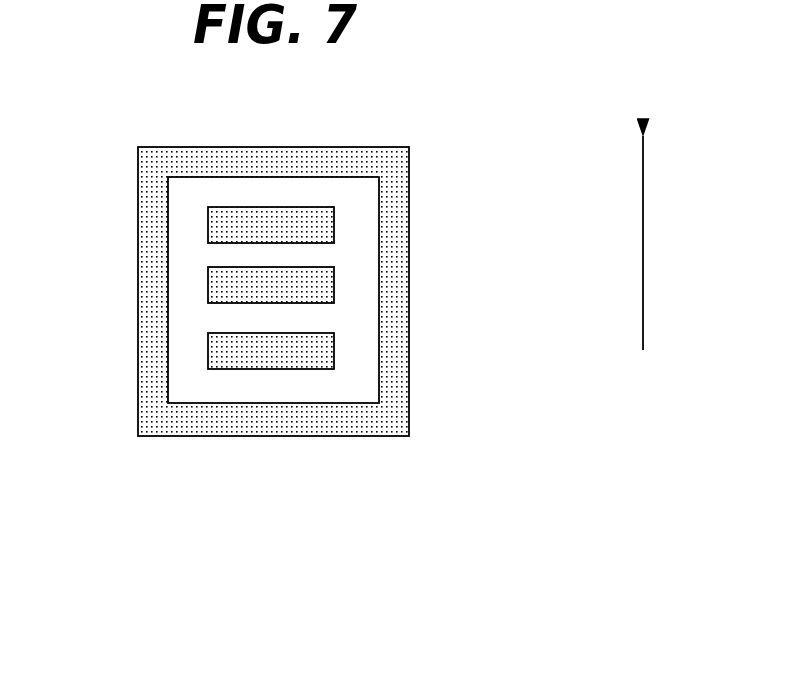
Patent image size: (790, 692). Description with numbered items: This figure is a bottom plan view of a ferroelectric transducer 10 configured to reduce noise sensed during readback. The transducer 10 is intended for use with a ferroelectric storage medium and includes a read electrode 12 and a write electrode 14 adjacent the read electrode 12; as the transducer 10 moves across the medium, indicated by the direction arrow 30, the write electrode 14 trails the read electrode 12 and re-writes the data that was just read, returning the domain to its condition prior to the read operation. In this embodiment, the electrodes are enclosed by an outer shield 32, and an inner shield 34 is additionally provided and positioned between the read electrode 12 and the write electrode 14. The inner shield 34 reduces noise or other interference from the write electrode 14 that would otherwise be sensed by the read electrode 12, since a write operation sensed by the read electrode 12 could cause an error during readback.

The transducer 10 is at (138, 112).
The read electrode 12 is at (336, 223).
The write electrode 14 is at (336, 353).
The flow direction 30 is at (643, 262).
The outer shield 32 is at (398, 442).
The inner shield 34 is at (336, 285).